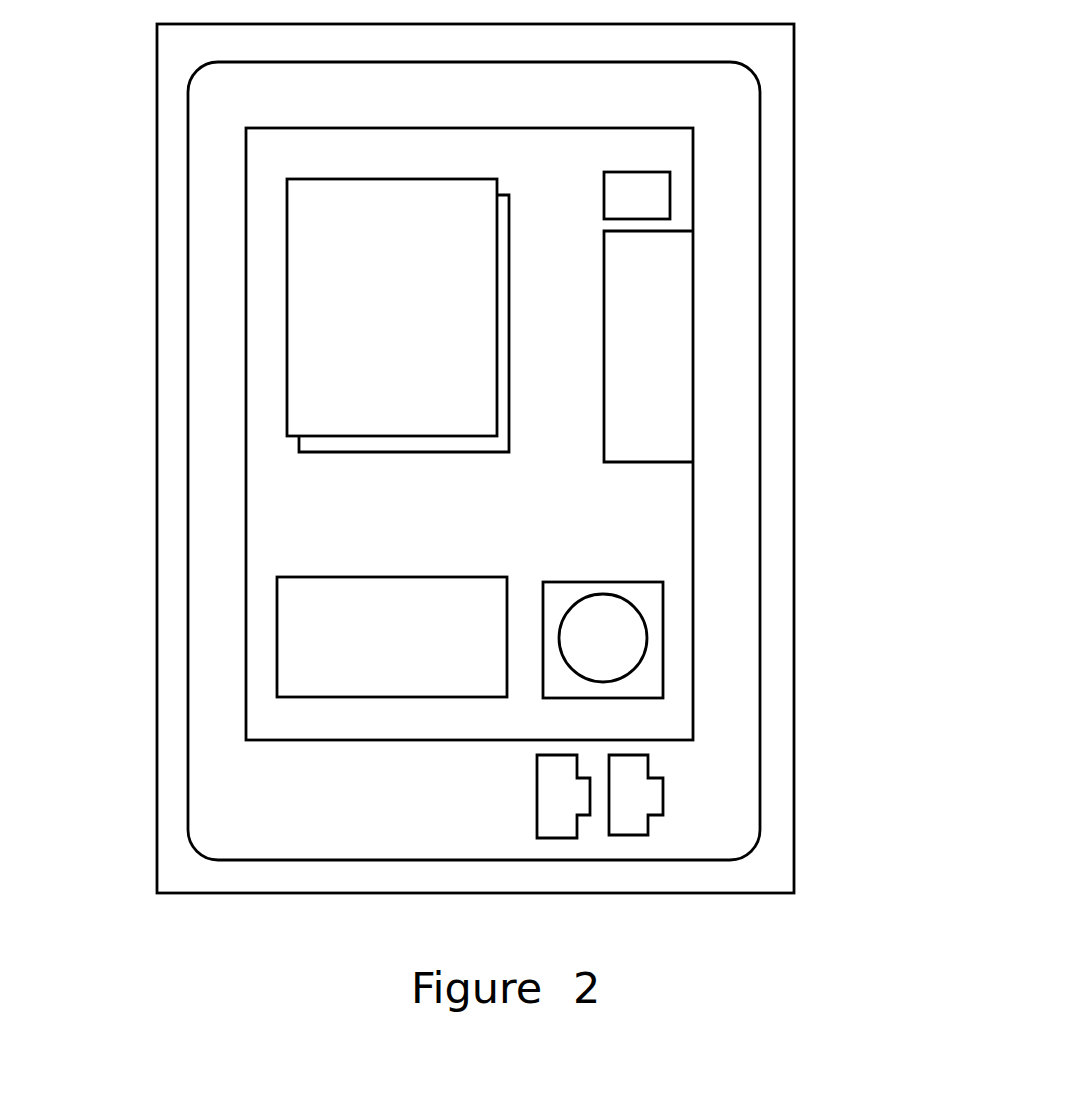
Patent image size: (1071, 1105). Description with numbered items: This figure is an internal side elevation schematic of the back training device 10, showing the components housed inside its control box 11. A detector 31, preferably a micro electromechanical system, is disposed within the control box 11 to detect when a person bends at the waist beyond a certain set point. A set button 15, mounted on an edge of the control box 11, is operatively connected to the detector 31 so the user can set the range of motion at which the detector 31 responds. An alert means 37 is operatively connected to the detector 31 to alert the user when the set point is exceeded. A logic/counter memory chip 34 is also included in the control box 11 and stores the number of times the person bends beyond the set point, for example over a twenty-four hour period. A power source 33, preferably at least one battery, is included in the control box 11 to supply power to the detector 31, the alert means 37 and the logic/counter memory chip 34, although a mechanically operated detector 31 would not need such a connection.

The back training device 10 is at (830, 59).
The control box 11 is at (820, 437).
The detector 31 is at (305, 333).
The alert means 37 is at (650, 198).
The logic/counter memory chip 34 is at (280, 645).
The set button 15 is at (637, 644).
The power source 33 is at (551, 820).